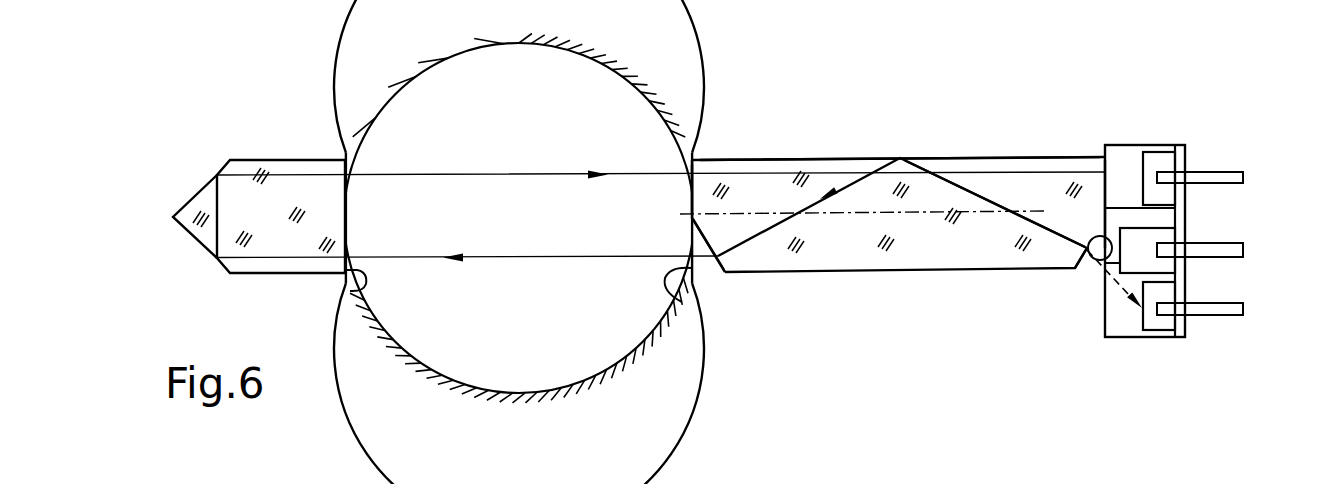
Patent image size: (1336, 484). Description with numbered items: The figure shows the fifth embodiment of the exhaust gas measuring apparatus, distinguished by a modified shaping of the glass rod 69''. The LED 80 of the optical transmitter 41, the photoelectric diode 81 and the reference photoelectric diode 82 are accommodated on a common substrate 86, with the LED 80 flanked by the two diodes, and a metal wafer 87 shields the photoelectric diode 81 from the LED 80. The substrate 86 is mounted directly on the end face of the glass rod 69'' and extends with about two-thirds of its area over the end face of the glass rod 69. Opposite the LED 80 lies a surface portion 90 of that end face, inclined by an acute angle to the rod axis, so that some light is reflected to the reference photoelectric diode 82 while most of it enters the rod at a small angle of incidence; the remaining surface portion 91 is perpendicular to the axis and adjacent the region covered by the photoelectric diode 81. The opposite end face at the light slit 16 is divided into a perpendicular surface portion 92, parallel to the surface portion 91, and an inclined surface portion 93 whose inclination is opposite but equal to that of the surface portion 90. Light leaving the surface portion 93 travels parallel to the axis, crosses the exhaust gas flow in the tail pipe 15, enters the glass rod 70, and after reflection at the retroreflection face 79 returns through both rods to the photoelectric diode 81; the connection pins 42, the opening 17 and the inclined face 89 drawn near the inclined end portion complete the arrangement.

The tail pipe 15 is at (679, 125).
The light slit 16 is at (684, 305).
The entrance opening 17 is at (349, 292).
The optical transmitter 41 is at (1200, 264).
The connection pin 42 is at (1196, 157).
The glass rod 69 is at (898, 272).
The glass rod 69'' is at (900, 113).
The glass rod 70 is at (287, 166).
The retroreflection face 79 is at (210, 256).
The LED 80 is at (1143, 240).
The photoelectric diode 81 is at (1156, 163).
The reference photoelectric diode 82 is at (1157, 293).
The substrate 86 is at (1122, 316).
The metal wafer 87 is at (1125, 208).
The reflecting face 89 is at (1080, 250).
The surface portion 90 is at (1074, 258).
The surface portion 91 is at (1103, 192).
The surface portion 92 is at (693, 195).
The surface portion 93 is at (713, 272).